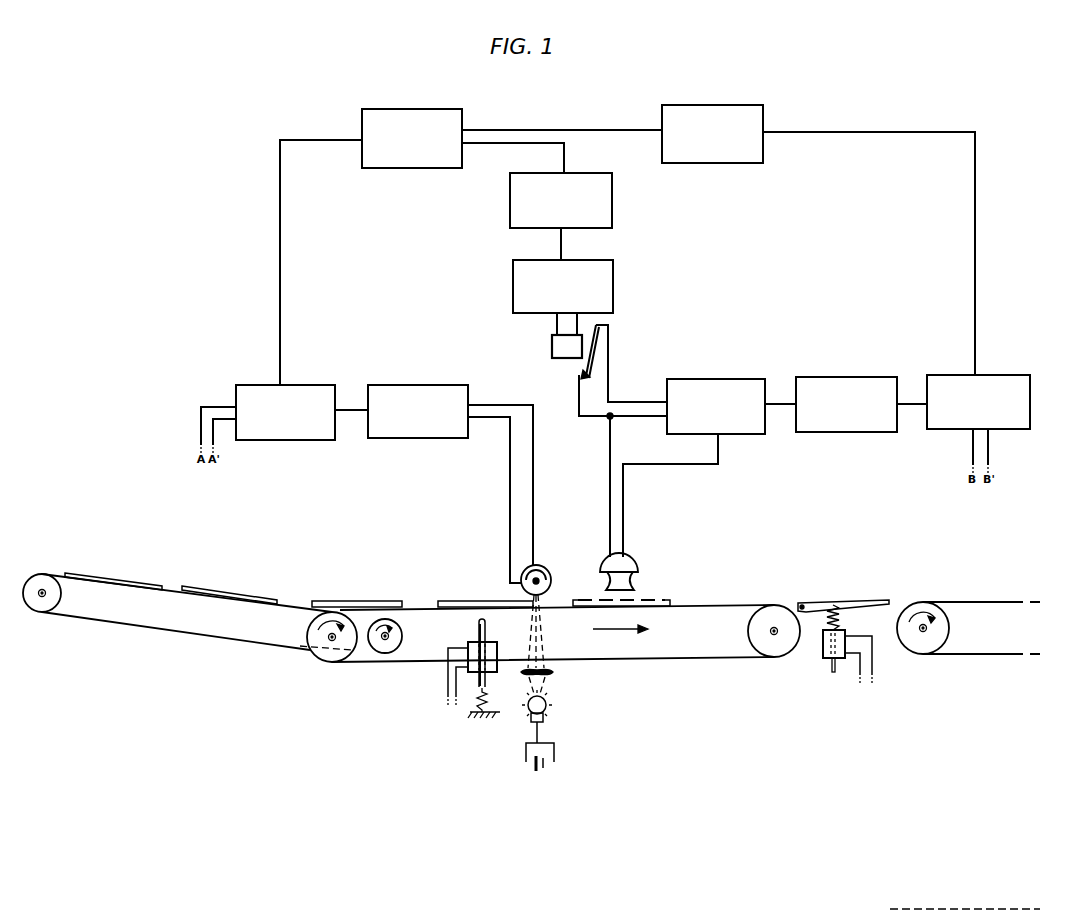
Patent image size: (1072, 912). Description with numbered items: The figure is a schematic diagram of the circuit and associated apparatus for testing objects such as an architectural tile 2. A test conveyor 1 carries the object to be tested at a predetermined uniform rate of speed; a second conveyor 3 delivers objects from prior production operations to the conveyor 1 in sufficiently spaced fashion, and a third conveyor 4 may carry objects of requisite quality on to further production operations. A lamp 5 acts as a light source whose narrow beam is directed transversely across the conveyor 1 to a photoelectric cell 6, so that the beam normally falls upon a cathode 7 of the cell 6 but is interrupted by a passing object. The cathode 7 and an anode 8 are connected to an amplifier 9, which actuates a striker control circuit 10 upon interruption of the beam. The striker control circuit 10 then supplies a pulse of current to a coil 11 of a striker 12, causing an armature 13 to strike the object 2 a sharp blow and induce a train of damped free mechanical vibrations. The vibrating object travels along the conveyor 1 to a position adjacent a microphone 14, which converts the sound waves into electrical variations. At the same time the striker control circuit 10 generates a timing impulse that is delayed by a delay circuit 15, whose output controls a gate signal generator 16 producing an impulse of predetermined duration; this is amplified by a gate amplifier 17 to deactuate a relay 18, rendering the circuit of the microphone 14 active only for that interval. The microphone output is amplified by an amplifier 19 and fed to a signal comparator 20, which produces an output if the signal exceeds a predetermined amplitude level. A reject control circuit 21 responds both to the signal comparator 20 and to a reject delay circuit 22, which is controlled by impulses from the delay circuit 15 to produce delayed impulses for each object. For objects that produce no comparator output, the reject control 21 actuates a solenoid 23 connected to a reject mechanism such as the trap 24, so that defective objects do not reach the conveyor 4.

The conveyor 1 is at (696, 606).
The architectural tile 2 is at (452, 601).
The second conveyor 3 is at (240, 637).
The third conveyor 4 is at (990, 602).
The lamp 5 is at (550, 707).
The photoelectric cell 6 is at (550, 574).
The cathode 7 is at (546, 582).
The anode 8 is at (546, 566).
The amplifier 9 is at (418, 385).
The striker control circuit 10 is at (295, 385).
The coil 11 is at (468, 646).
The striker 12 is at (524, 663).
The armature 13 is at (487, 636).
The microphone 14 is at (626, 565).
The delay circuit 15 is at (395, 109).
The gate signal generator 16 is at (510, 196).
The gate amplifier 17 is at (513, 281).
The relay 18 is at (552, 346).
The amplifier 19 is at (695, 379).
The signal comparator 20 is at (815, 377).
The reject control circuit 21 is at (986, 375).
The reject delay circuit 22 is at (692, 105).
The solenoid 23 is at (823, 655).
The trap 24 is at (833, 603).